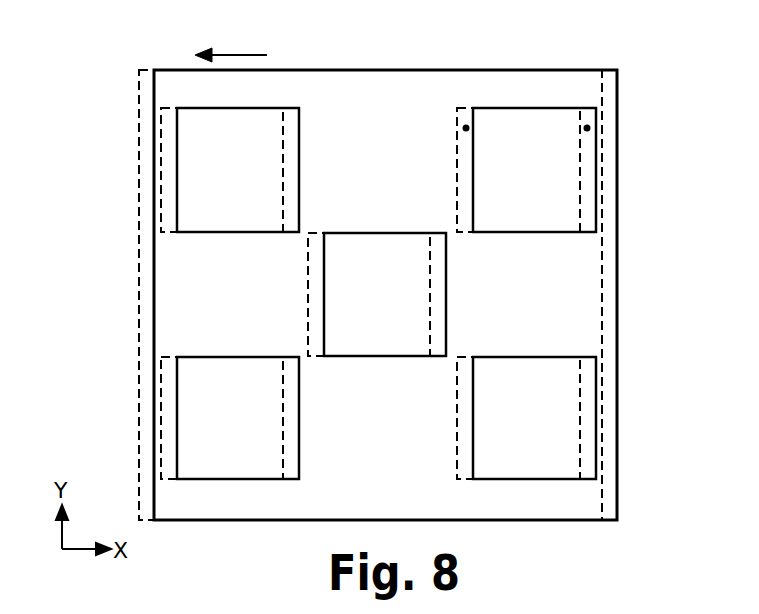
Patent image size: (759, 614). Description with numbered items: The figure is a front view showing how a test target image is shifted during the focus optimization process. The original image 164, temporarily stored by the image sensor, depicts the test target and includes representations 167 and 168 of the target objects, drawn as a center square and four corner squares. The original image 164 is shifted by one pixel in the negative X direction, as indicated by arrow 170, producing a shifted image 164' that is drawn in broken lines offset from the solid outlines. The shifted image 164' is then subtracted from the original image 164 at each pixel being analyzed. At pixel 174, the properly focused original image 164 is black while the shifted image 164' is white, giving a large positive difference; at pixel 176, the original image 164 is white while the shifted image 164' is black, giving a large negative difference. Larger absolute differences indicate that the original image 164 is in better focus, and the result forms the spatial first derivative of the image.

The original image 164 is at (362, 278).
The shifted image 164' is at (313, 295).
The representation 168 is at (210, 183).
The representation 167 is at (410, 295).
The arrow 170 is at (240, 55).
The pixel 174 is at (587, 128).
The pixel 176 is at (466, 128).